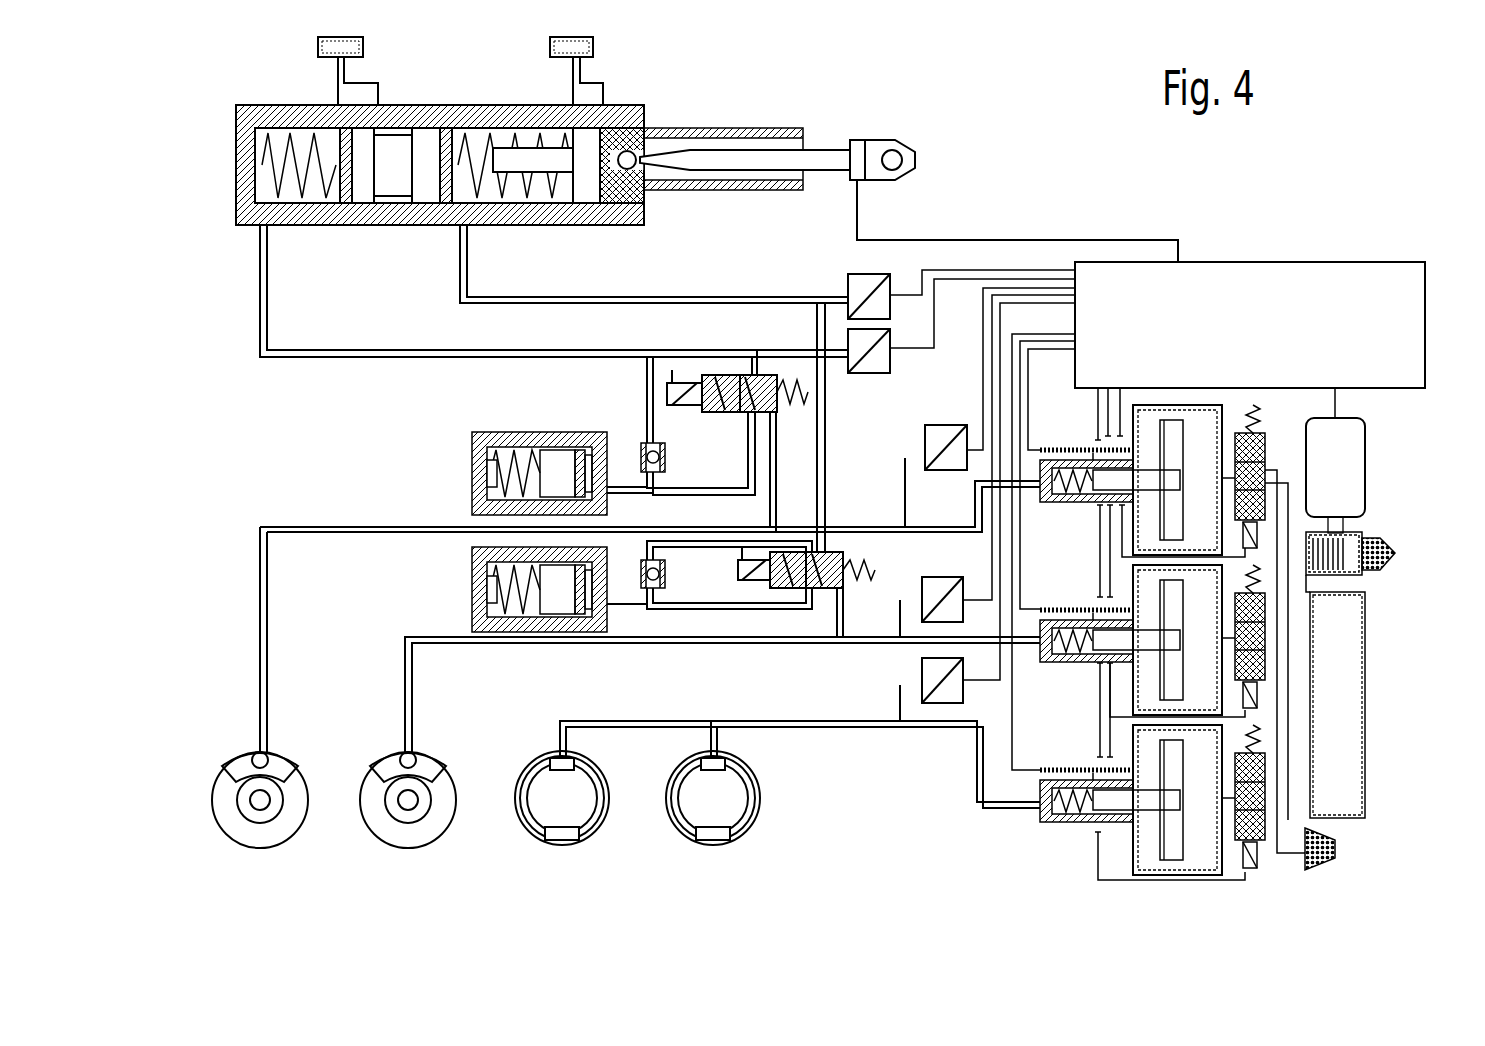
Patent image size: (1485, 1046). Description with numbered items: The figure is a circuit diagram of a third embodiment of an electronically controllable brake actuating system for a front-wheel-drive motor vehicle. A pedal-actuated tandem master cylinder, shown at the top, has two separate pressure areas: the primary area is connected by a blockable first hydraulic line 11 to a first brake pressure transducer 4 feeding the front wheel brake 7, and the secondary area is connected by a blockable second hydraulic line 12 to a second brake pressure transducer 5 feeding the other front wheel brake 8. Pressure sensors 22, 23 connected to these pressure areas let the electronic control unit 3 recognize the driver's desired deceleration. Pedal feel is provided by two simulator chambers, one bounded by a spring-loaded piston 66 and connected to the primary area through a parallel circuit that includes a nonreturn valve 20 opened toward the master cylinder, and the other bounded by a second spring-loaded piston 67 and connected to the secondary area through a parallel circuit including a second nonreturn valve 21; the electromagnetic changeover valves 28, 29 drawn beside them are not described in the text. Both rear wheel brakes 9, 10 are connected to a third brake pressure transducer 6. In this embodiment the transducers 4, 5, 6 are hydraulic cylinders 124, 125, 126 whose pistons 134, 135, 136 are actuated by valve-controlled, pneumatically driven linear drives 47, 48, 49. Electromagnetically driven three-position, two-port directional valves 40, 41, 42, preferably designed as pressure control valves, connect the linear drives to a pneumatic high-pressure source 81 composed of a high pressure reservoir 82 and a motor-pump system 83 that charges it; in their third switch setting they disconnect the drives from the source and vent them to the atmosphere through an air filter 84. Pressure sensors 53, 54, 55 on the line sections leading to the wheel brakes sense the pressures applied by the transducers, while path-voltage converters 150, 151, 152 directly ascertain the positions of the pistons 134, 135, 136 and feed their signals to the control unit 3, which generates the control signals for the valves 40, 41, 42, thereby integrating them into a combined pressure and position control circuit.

The electronic control unit 3 is at (1130, 328).
The brake pressure transducer 4 is at (1172, 400).
The brake pressure transducer 5 is at (1171, 664).
The brake pressure transducer 6 is at (1164, 824).
The wheel brake 7 is at (432, 760).
The wheel brake 8 is at (282, 760).
The wheel brake 9 is at (592, 775).
The wheel brake 10 is at (745, 775).
The first hydraulic line 11 is at (467, 272).
The second hydraulic line 12 is at (267, 312).
The nonreturn valve 20 is at (665, 575).
The second nonreturn valve 21 is at (665, 457).
The pressure sensor 22 is at (850, 274).
The pressure sensor 23 is at (868, 373).
The solenoid changeover valve 28 is at (843, 560).
The solenoid changeover valve 29 is at (738, 375).
The 3/2-way valve 40 is at (1268, 440).
The 3/2-way valve 41 is at (1291, 636).
The 3/2-way valve 42 is at (1269, 824).
The linear drive 47 is at (1208, 432).
The linear drive 48 is at (1253, 640).
The linear drive 49 is at (1180, 831).
The pressure sensor 53 is at (948, 425).
The pressure sensor 54 is at (948, 577).
The pressure sensor 55 is at (945, 703).
The spring-loaded piston 66 is at (528, 600).
The second spring-loaded piston 67 is at (538, 455).
The pneumatic high-pressure source 81 is at (1415, 820).
The high pressure reservoir 82 is at (1335, 762).
The motor-pump system 83 is at (1338, 480).
The air filter 84 is at (1322, 865).
The hydraulic cylinder 124 is at (1045, 495).
The hydraulic cylinder 125 is at (1073, 665).
The hydraulic cylinder 126 is at (1054, 831).
The piston 134 is at (1100, 483).
The piston 135 is at (1120, 670).
The piston 136 is at (1115, 838).
The path-voltage converter 150 is at (1078, 448).
The path-voltage converter 151 is at (1076, 589).
The path-voltage converter 152 is at (1071, 743).